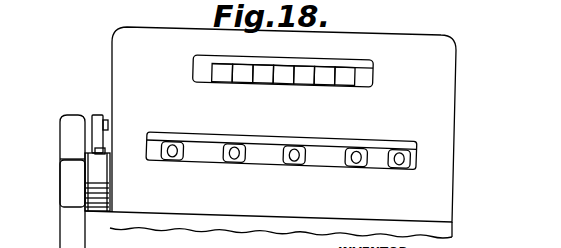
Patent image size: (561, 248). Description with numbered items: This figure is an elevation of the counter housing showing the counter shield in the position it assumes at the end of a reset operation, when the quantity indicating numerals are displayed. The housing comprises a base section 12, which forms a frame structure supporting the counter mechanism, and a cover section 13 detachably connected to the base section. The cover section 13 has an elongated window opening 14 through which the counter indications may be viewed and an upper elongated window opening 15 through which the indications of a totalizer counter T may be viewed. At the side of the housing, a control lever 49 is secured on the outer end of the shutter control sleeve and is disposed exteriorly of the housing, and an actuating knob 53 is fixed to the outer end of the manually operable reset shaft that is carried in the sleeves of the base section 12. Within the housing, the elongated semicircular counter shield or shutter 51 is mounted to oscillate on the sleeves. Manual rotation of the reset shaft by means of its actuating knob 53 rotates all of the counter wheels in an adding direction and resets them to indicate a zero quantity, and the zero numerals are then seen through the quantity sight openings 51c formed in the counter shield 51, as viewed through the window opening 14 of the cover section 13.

The base section 12 is at (182, 223).
The cover section 13 is at (288, 118).
The elongated window opening 14 is at (325, 141).
The upper elongated window opening 15 is at (358, 63).
The totalizer counter T is at (203, 66).
The control lever 49 is at (103, 115).
The counter shield or shutter 51 is at (204, 152).
The quantity sight openings 51c is at (370, 156).
The actuating knob 53 is at (68, 143).